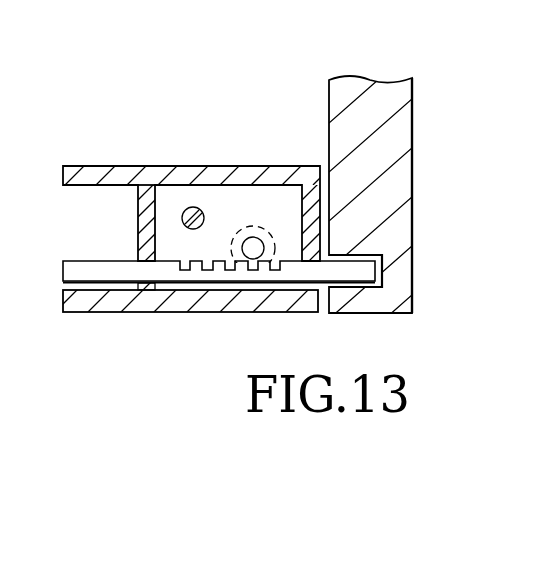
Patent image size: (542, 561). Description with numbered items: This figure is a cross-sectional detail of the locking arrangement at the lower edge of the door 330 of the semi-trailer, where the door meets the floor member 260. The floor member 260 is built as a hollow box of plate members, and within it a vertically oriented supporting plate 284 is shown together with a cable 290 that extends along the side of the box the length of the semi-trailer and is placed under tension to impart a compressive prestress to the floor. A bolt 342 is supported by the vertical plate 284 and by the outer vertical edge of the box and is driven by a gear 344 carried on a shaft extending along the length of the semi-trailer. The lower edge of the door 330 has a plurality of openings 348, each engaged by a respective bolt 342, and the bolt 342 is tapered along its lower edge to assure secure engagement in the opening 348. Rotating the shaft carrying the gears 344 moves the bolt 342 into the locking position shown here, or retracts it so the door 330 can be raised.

The floor member 260 is at (231, 323).
The supporting plate 284 is at (134, 234).
The cable 290 is at (199, 208).
The door 330 is at (385, 88).
The bolt 342 is at (63, 272).
The gear 344 is at (253, 237).
The opening 348 is at (383, 285).